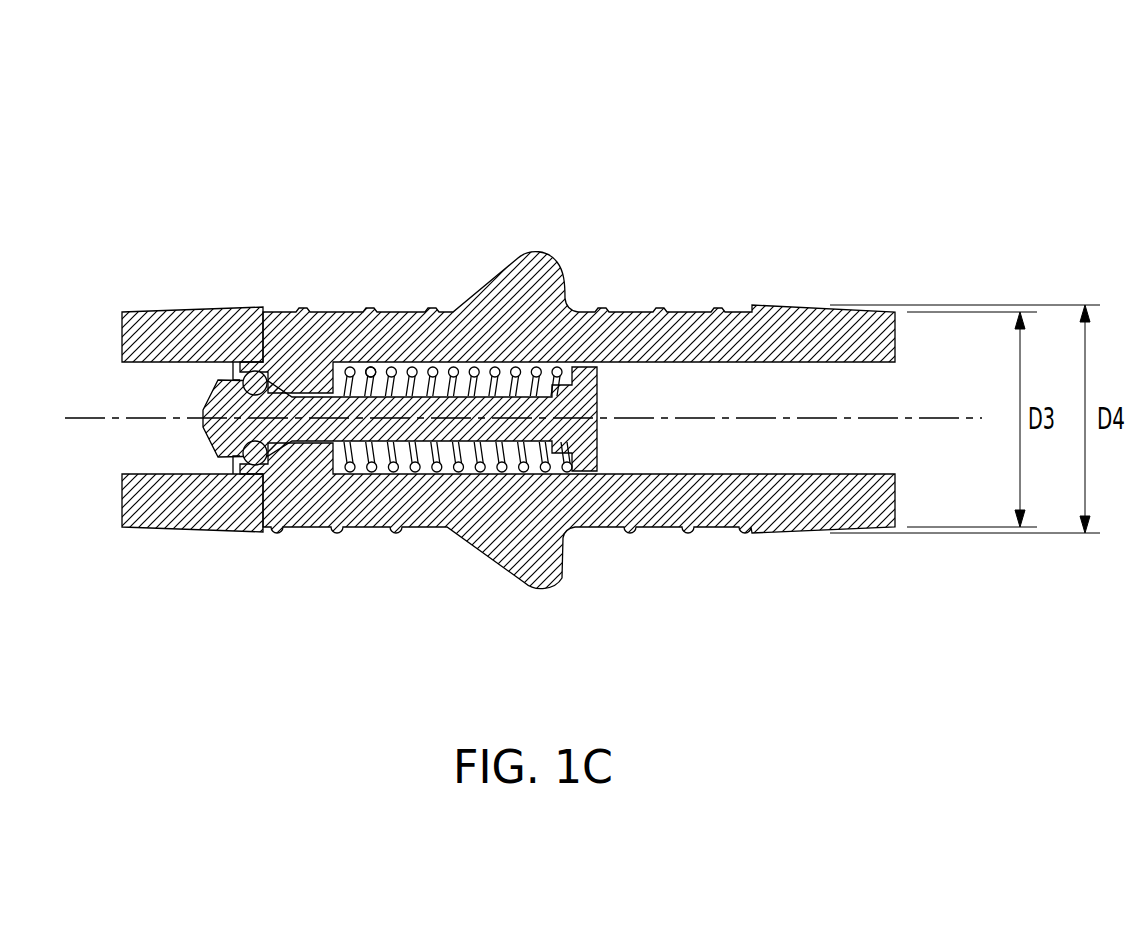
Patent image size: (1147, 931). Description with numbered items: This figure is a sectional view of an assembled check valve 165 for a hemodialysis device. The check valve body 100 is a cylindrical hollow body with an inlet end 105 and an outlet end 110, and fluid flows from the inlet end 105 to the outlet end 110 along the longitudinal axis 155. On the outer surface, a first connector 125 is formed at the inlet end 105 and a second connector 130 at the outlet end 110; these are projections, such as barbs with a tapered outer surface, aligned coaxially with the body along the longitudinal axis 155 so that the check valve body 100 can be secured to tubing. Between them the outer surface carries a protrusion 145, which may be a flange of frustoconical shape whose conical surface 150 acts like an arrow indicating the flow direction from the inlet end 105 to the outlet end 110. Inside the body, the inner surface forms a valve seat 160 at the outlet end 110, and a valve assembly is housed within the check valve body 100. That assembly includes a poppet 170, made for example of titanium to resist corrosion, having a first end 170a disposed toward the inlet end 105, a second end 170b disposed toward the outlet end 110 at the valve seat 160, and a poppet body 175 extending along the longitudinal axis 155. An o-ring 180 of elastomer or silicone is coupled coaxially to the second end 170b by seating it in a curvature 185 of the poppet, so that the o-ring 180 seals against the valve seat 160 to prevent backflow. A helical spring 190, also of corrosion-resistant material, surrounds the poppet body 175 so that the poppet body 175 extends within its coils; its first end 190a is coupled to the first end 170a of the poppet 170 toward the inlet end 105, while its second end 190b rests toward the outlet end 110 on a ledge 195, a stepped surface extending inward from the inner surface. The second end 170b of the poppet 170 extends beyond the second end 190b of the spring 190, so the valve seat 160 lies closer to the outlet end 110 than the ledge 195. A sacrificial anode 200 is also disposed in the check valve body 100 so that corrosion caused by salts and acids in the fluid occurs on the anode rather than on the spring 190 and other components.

The check valve body 100 is at (412, 122).
The inlet end 105 is at (808, 594).
The outlet end 110 is at (166, 597).
The first connector 125 is at (818, 307).
The second connector 130 is at (180, 307).
The protrusion 145 is at (488, 588).
The conical surface 150 is at (510, 267).
The longitudinal axis 155 is at (945, 418).
The valve seat 160 is at (238, 385).
The check valve 165 is at (122, 153).
The poppet 170 is at (425, 403).
The first end of the poppet 170a is at (567, 375).
The second end of the poppet 170b is at (248, 372).
The poppet body 175 is at (393, 435).
The o-ring 180 is at (250, 465).
The curvature 185 is at (263, 447).
The spring 190 is at (508, 470).
The first end of the spring 190a is at (567, 472).
The second end of the spring 190b is at (363, 368).
The ledge 195 is at (318, 457).
The sacrificial anode 200 is at (328, 400).